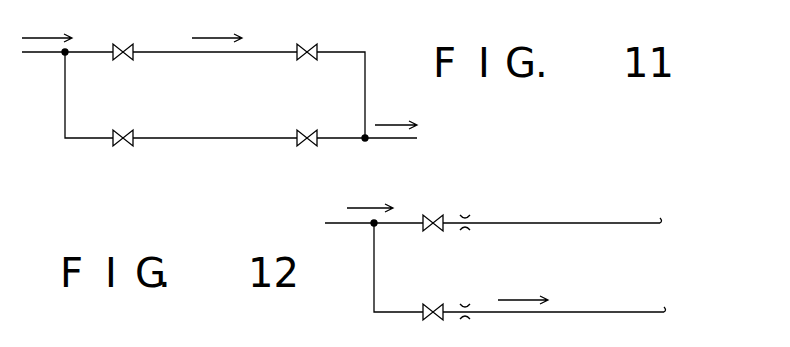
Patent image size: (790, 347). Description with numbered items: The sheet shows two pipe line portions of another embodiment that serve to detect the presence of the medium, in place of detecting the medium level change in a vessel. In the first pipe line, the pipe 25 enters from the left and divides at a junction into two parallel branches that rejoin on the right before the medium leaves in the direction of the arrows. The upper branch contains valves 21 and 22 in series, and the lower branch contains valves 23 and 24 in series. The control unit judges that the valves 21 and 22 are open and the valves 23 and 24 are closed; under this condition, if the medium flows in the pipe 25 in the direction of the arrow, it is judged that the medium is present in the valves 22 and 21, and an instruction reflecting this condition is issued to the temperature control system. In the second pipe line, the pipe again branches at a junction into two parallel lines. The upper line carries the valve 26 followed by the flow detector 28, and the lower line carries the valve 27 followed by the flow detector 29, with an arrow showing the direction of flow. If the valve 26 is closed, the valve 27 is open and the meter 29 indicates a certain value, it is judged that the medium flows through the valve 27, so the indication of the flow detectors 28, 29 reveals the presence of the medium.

In FIG. 11, the valve 21 is at (124, 44).
In FIG. 11, the valve 22 is at (307, 44).
In FIG. 11, the valve 23 is at (123, 130).
In FIG. 11, the valve 24 is at (307, 130).
In FIG. 11, the pipe 25 is at (88, 49).
In FIG. 12, the pipe 25 is at (340, 222).
In FIG. 12, the valve 26 is at (430, 215).
In FIG. 12, the valve 27 is at (434, 304).
In FIG. 12, the flow detector 28 is at (470, 213).
In FIG. 12, the flow detector 29 is at (467, 306).